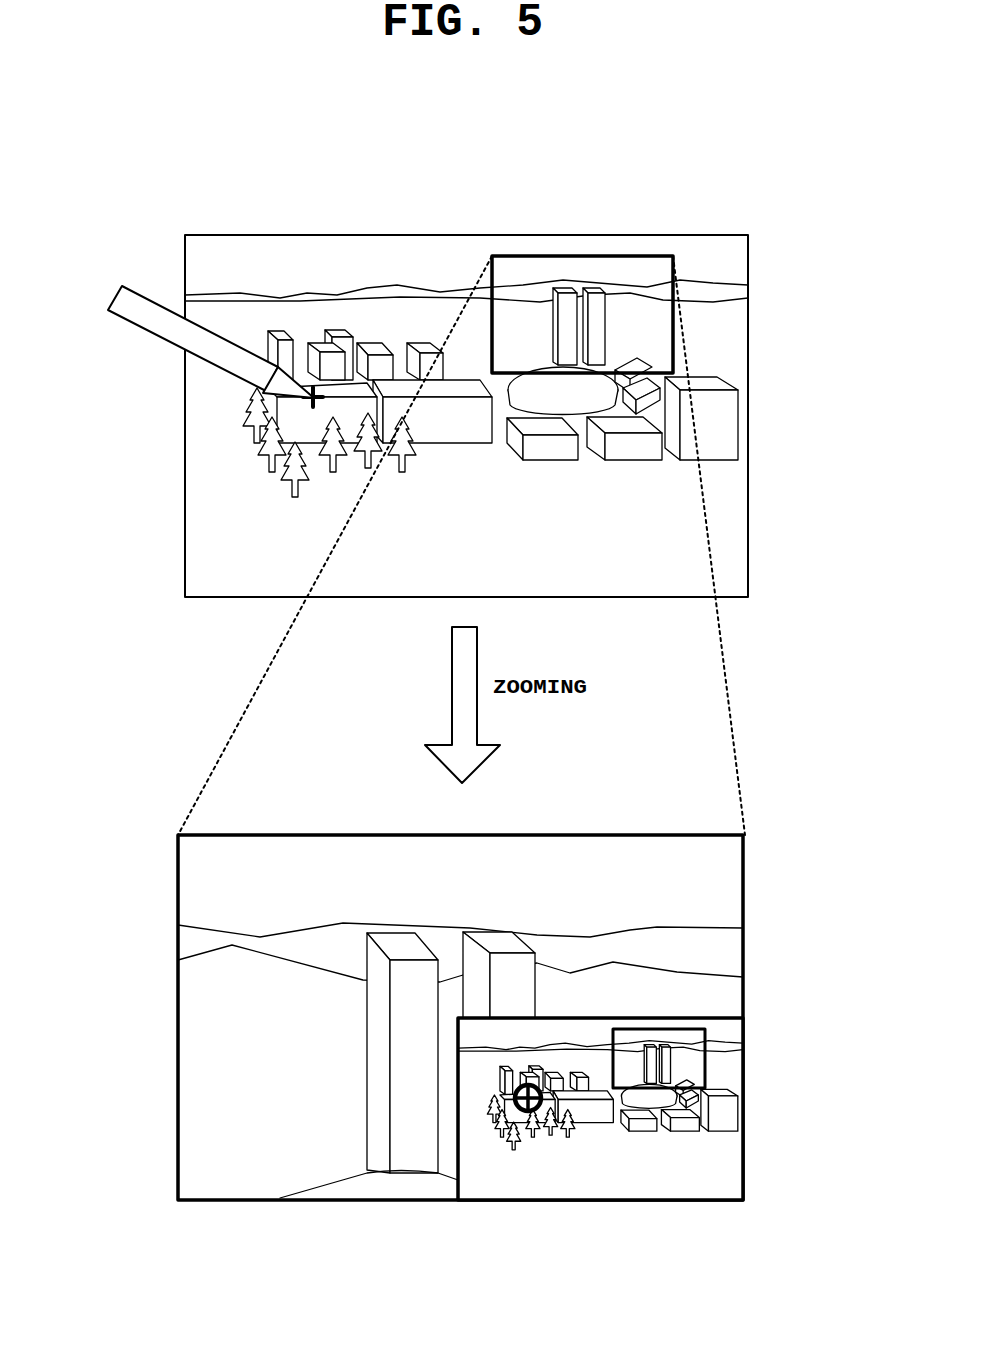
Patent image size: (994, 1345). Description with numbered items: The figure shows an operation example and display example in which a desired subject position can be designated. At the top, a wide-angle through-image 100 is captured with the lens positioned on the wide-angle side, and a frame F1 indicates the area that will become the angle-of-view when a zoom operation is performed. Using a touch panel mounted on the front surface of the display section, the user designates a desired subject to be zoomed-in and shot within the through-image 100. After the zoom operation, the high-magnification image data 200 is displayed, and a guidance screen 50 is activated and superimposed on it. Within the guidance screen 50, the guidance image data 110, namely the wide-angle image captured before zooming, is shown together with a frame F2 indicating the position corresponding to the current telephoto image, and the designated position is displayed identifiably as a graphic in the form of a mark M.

The through-image 100 is at (262, 247).
The image data 200 is at (190, 893).
The guidance screen 50 is at (705, 1017).
The guidance image data 110 is at (730, 1170).
The frame F1 is at (582, 257).
The frame F2 is at (705, 1062).
The mark M is at (532, 1126).